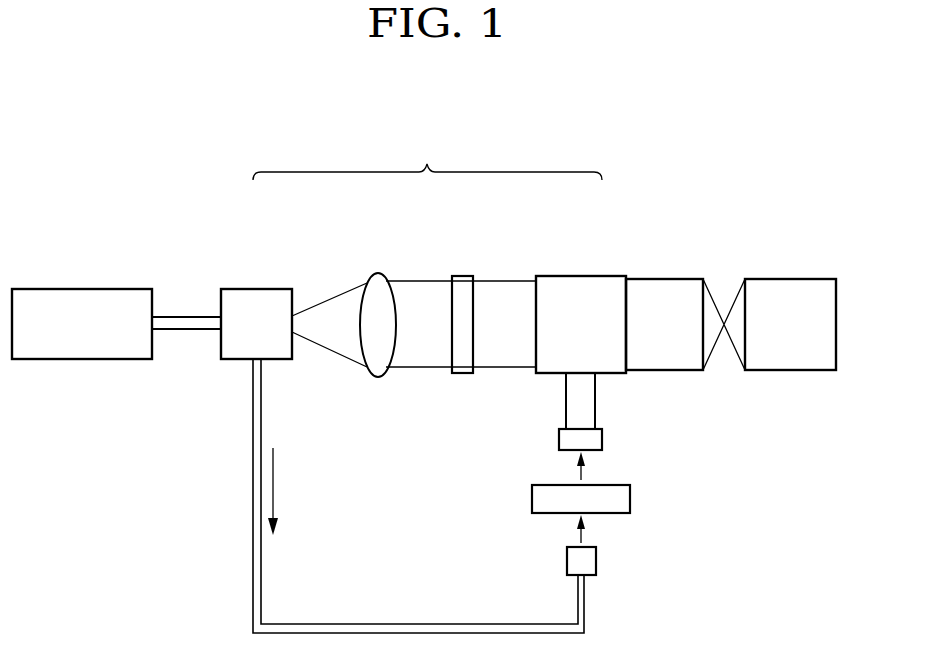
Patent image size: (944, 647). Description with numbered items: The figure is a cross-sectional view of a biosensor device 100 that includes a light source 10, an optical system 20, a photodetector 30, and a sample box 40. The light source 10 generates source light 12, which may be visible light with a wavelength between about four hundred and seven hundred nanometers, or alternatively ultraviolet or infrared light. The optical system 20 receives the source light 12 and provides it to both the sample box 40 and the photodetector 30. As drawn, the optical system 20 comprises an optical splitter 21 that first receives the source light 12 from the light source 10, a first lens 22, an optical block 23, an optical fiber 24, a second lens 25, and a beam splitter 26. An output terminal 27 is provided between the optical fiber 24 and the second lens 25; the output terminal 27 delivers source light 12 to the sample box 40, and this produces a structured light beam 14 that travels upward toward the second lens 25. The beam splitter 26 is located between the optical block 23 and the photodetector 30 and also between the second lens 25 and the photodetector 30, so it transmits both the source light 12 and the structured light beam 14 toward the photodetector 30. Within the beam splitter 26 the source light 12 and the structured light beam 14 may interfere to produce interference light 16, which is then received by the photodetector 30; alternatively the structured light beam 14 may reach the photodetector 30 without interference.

The biosensor device 100 is at (721, 138).
The light source 10 is at (82, 289).
The source light 12 is at (184, 317).
The structured light beam 14 is at (583, 470).
The interference light 16 is at (665, 279).
The optical system 20 is at (427, 156).
The optical splitter 21 is at (257, 289).
The first lens 22 is at (378, 272).
The optical block 23 is at (462, 276).
The optical fiber 24 is at (422, 623).
The second lens 25 is at (559, 438).
The beam splitter 26 is at (580, 276).
The output terminal 27 is at (596, 562).
The photodetector 30 is at (790, 279).
The sample box 40 is at (630, 498).